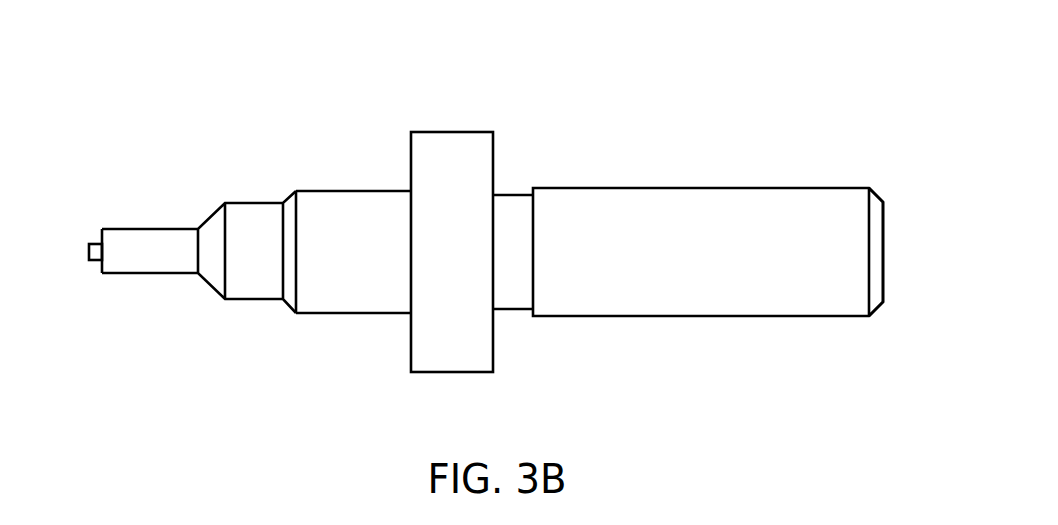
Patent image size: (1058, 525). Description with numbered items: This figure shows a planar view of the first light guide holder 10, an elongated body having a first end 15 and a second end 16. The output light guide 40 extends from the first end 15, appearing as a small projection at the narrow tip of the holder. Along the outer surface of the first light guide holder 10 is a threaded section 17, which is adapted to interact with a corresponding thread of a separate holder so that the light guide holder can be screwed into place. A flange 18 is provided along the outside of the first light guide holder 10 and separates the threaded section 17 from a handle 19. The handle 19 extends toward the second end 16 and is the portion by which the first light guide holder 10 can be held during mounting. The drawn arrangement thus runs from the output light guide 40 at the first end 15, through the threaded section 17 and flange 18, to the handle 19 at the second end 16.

The first light guide holder 10 is at (620, 118).
The first end 15 is at (118, 218).
The second end 16 is at (895, 315).
The threaded section 17 is at (338, 298).
The flange 18 is at (448, 130).
The handle 19 is at (692, 303).
The output light guide 40 is at (95, 262).